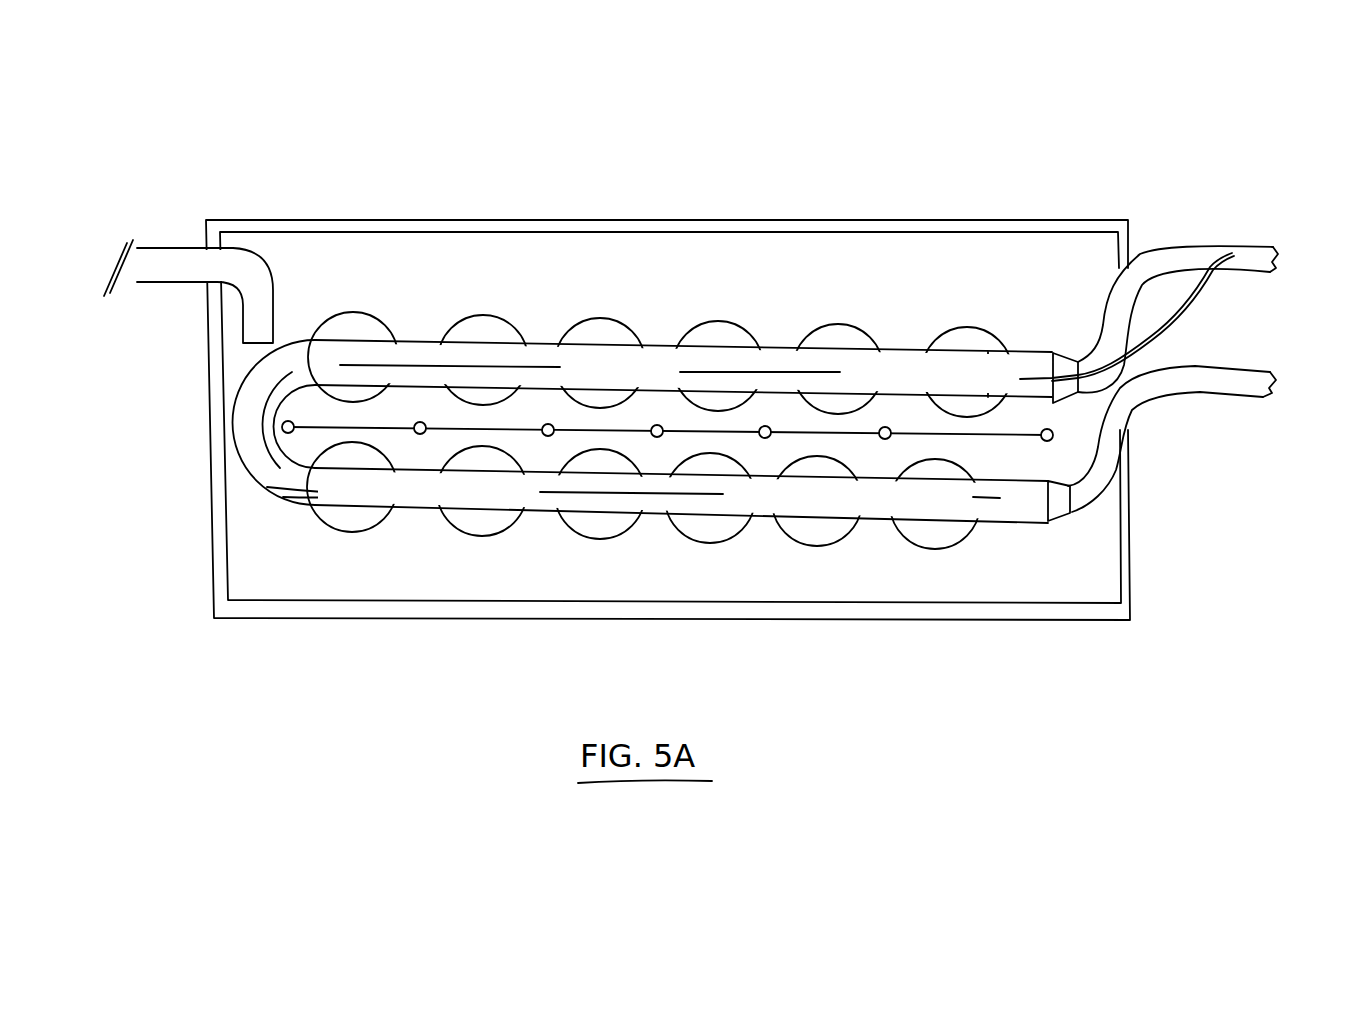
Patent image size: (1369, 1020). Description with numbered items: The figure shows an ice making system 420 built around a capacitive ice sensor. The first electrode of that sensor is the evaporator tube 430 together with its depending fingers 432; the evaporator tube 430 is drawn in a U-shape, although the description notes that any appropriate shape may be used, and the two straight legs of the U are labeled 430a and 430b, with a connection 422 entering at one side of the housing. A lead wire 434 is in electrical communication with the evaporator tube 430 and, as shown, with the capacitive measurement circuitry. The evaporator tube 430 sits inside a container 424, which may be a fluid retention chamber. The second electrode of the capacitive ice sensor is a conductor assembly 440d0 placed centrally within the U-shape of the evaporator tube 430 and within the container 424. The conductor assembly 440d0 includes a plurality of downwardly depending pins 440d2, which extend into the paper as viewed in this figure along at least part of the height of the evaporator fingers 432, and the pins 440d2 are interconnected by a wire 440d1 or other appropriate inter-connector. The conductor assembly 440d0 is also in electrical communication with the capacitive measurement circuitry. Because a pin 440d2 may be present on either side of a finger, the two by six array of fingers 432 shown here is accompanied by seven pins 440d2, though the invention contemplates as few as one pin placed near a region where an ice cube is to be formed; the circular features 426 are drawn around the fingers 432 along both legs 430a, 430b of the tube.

The ice making system 420 is at (378, 148).
The inlet conduit 422 is at (167, 265).
The container 424 is at (278, 608).
The heating coil 426 is at (838, 343).
The evaporator tube 430 is at (253, 465).
The first tube leg 430a is at (650, 375).
The second tube leg 430b is at (1027, 515).
The fingers 432 is at (758, 513).
The lead wire 434 is at (1200, 300).
The conductor assembly 440d0 is at (855, 433).
The wire 440d1 is at (514, 430).
The pins 440d2 is at (548, 437).